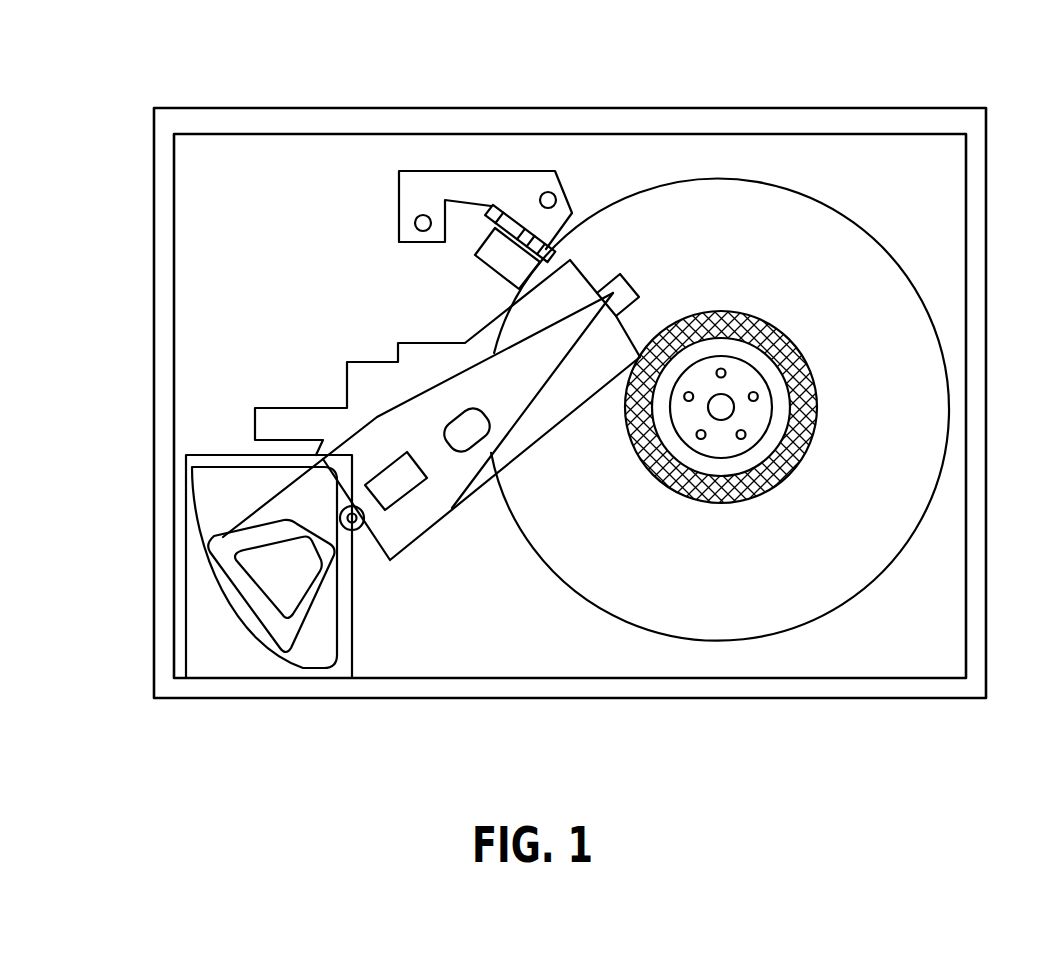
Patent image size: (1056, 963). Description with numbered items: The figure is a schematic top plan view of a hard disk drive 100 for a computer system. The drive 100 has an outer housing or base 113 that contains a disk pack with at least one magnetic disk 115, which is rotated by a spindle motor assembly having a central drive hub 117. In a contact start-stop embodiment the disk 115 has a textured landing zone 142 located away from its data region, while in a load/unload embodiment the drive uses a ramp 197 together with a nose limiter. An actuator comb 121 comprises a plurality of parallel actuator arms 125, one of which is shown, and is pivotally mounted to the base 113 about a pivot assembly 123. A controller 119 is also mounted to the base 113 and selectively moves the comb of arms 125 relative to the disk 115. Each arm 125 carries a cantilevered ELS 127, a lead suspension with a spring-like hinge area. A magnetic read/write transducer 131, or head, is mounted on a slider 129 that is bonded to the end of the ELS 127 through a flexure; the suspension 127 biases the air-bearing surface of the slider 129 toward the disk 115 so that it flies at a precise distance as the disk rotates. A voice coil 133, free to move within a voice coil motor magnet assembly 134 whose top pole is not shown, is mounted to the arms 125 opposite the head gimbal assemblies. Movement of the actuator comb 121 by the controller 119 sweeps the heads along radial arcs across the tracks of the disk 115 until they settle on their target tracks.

The hard disk drive 100 is at (593, 50).
The base 113 is at (975, 166).
The magnetic disk 115 is at (837, 208).
The central drive hub 117 is at (753, 415).
The controller 119 is at (263, 660).
The actuator comb 121 is at (356, 378).
The pivot assembly 123 is at (358, 529).
The actuator arm 125 is at (452, 508).
The ELS 127 is at (530, 368).
The slider 129 is at (612, 286).
The magnetic read/write transducer 131 is at (639, 297).
The voice coil 133 is at (243, 537).
The voice coil motor magnet assembly 134 is at (242, 607).
The textured landing zone 142 is at (730, 309).
The ramp 197 is at (503, 279).